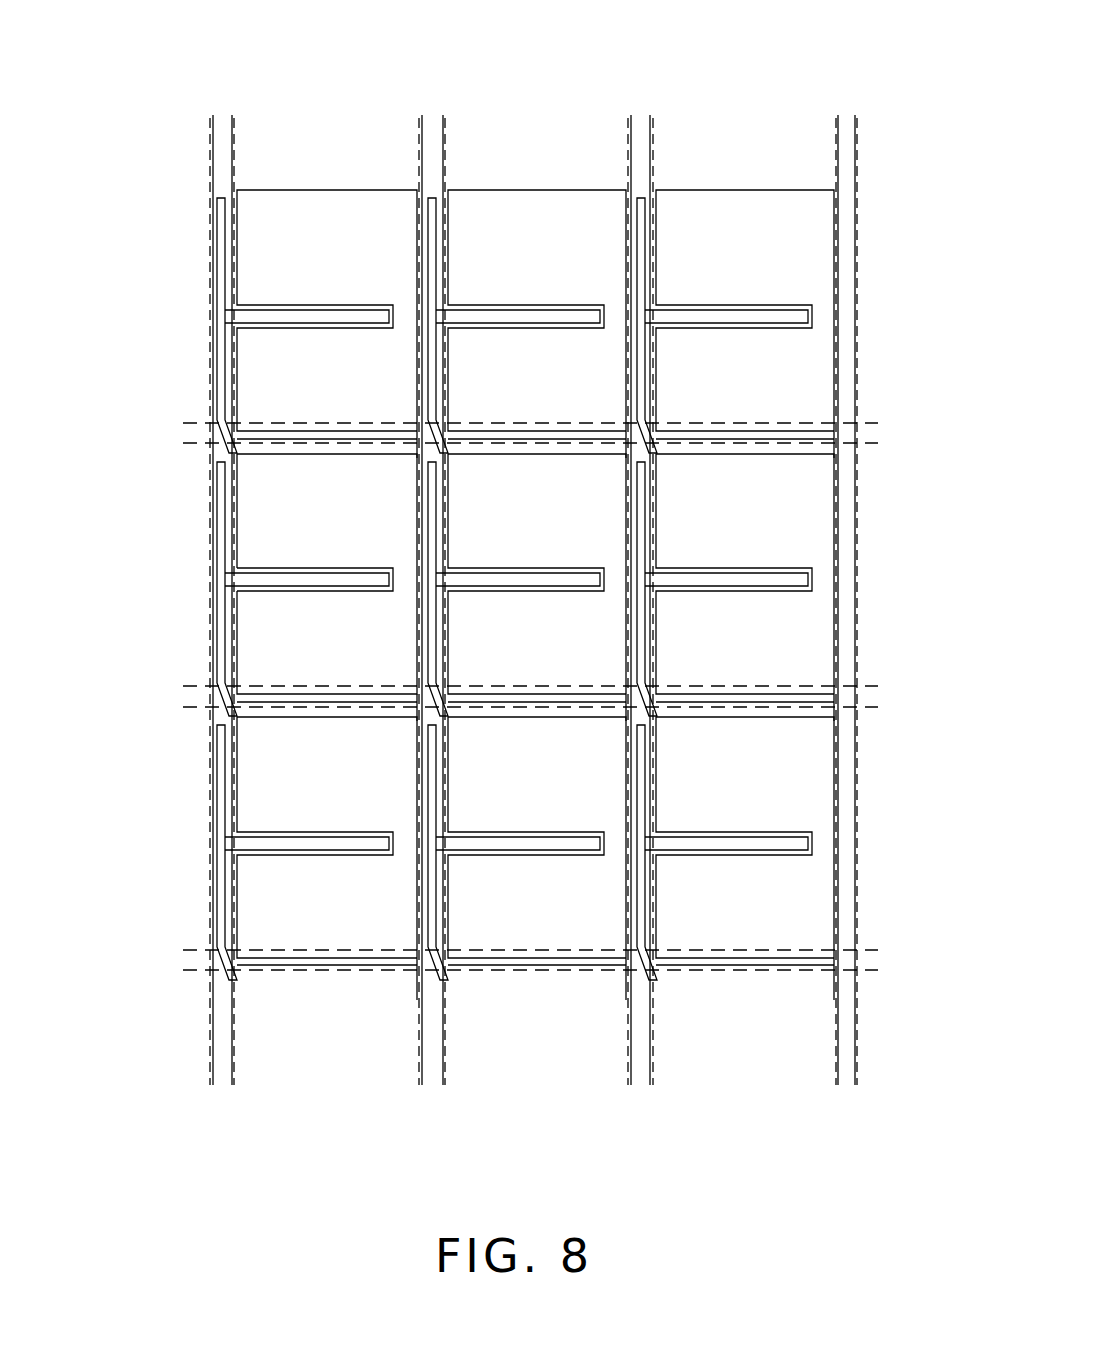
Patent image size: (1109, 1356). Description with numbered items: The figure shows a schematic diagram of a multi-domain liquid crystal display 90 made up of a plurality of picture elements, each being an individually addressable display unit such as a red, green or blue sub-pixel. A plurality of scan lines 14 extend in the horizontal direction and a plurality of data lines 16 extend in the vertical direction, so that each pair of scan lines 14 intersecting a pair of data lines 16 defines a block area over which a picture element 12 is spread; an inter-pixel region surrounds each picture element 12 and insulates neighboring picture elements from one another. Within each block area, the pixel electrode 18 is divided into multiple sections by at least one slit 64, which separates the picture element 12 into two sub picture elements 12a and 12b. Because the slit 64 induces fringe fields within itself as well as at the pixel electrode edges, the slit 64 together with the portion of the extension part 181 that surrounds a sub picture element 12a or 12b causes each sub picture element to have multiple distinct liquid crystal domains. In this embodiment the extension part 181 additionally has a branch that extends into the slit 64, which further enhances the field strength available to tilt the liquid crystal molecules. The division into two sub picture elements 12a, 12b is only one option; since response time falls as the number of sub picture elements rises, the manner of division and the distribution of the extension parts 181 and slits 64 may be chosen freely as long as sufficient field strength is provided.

The multi-domain liquid crystal display 90 is at (951, 46).
The data line 16 is at (212, 186).
The scan line 14 is at (186, 423).
The picture element 12 is at (92, 527).
The sub picture element 12a is at (270, 532).
The sub picture element 12b is at (265, 640).
The pixel electrode 18 is at (237, 492).
The extension part 181 is at (222, 522).
The slit 64 is at (318, 592).